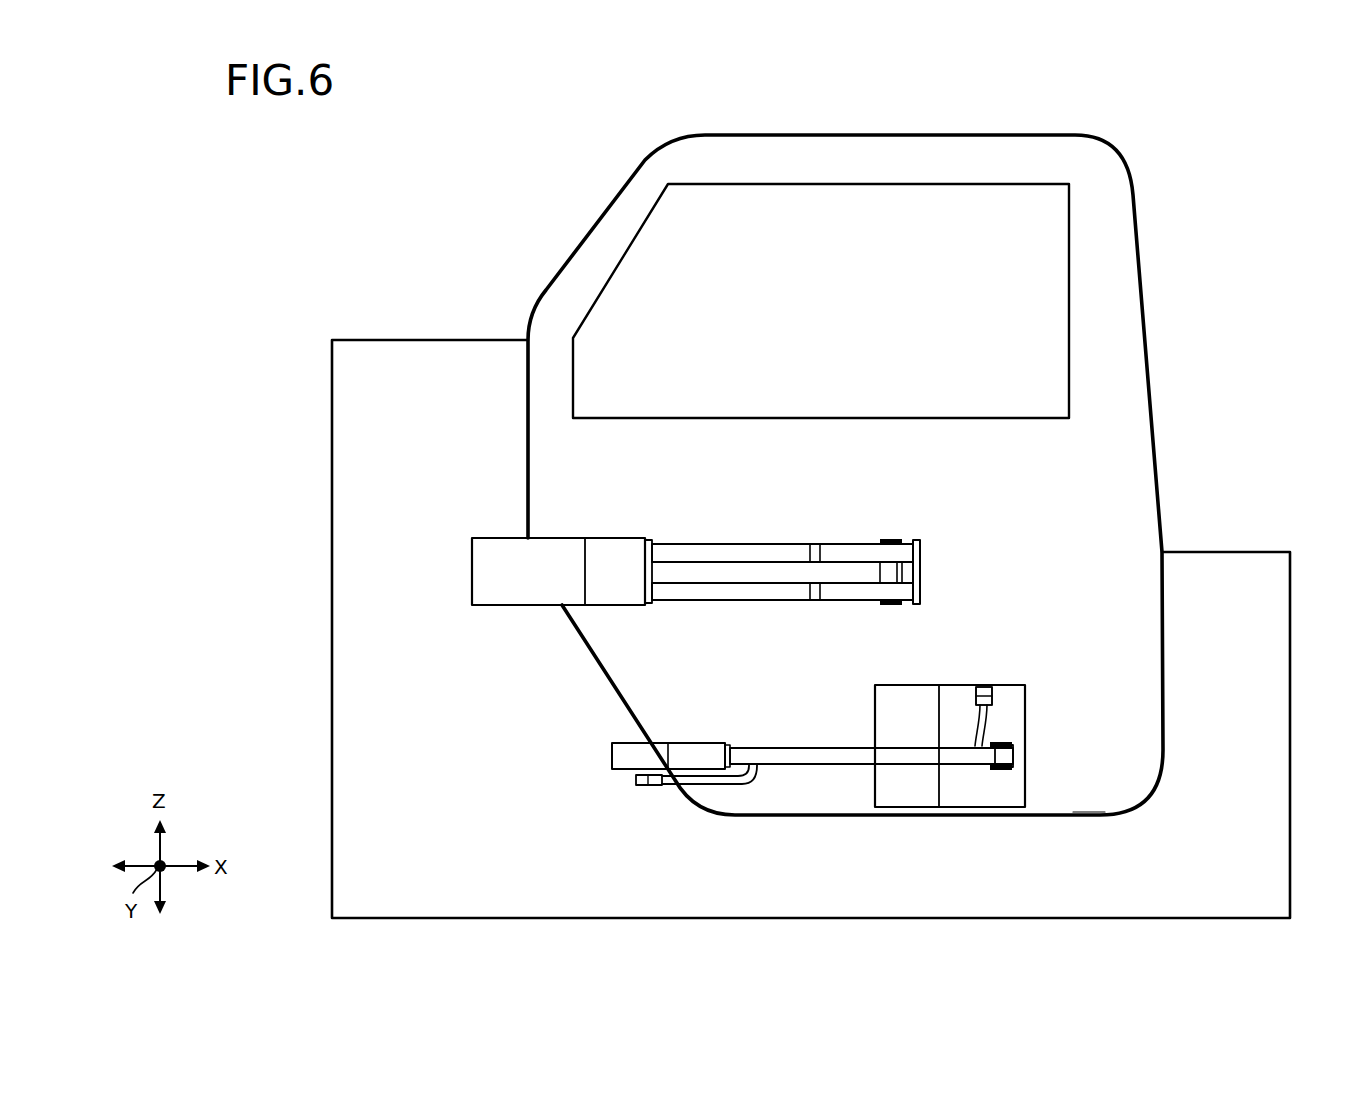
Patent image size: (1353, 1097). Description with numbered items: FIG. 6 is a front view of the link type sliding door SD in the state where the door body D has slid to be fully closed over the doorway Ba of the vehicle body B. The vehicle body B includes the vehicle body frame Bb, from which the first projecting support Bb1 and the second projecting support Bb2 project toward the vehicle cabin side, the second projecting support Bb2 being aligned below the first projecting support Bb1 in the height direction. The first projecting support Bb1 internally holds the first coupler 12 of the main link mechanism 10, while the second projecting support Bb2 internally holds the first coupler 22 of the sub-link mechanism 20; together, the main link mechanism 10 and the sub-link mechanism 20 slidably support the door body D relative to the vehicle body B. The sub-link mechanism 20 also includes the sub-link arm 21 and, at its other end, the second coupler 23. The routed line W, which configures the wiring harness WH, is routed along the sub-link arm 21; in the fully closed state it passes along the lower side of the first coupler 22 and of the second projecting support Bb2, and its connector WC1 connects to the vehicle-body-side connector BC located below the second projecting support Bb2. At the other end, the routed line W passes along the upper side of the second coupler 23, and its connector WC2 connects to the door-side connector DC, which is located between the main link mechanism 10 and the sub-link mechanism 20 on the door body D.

The main link mechanism 10 is at (583, 347).
The first coupler 12 is at (583, 347).
The door body D is at (735, 162).
The link type sliding door SD is at (845, 434).
The door-side connector DC is at (992, 688).
The vehicle body B is at (811, 657).
The vehicle body frame Bb is at (1057, 878).
The doorway Ba is at (1073, 812).
The first projecting support Bb1 is at (492, 565).
The second projecting support Bb2 is at (640, 748).
The sub-link mechanism 20 is at (934, 830).
The sub-link arm 21 is at (862, 785).
The first coupler 22 is at (737, 768).
The second coupler 23 is at (1008, 742).
The routed line W is at (662, 869).
The wiring harness WH is at (662, 869).
The connector WC1 is at (651, 787).
The connector WC2 is at (986, 687).
The vehicle-body-side connector BC is at (638, 787).